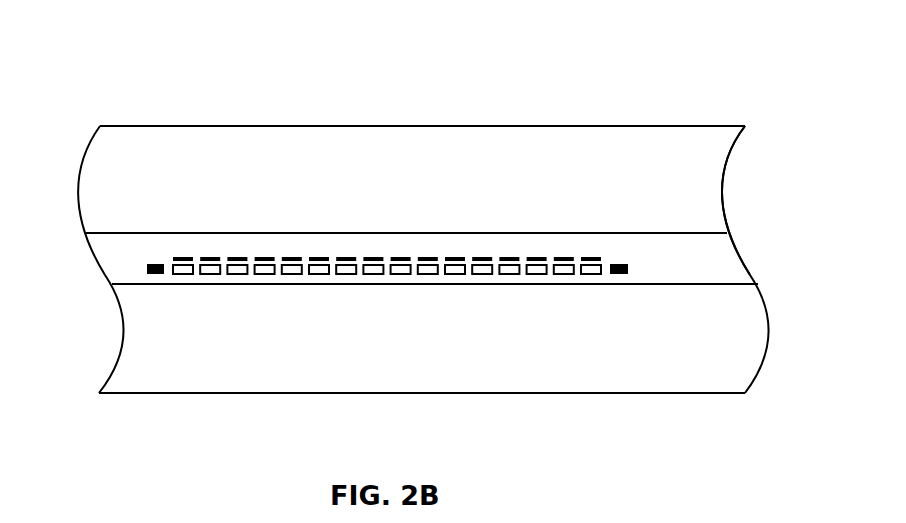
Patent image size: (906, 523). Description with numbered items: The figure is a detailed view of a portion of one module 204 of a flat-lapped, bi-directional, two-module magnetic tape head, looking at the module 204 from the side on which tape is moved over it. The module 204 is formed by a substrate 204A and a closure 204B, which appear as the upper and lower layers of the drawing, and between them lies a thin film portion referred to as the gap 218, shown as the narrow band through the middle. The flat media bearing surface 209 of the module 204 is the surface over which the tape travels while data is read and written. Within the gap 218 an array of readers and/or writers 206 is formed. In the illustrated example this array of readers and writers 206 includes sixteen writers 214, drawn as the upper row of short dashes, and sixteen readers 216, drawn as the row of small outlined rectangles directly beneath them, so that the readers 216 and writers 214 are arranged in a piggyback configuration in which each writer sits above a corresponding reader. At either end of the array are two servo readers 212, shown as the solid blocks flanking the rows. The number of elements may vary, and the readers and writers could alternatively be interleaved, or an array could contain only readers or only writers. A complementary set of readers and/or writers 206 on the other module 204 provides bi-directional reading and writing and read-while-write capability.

The module 204 is at (113, 108).
The substrate 204A is at (208, 126).
The media bearing surface 209 is at (343, 197).
The writers 214 is at (508, 255).
The readers and/or writers 206 is at (643, 258).
The gap 218 is at (746, 254).
The servo readers 212 is at (147, 268).
The readers 216 is at (512, 274).
The closure 204B is at (263, 393).